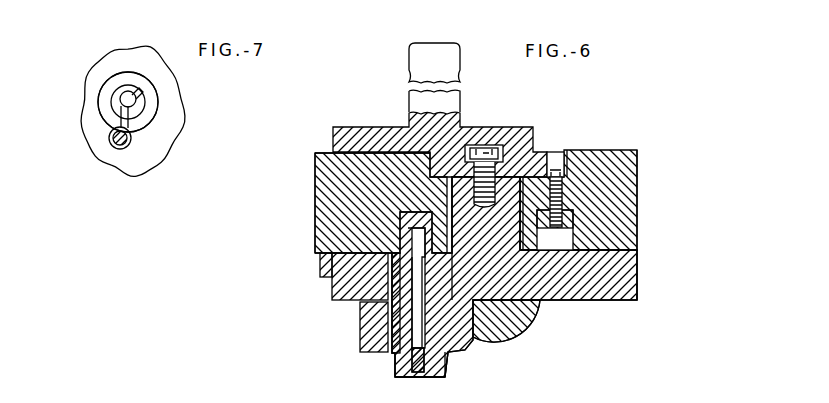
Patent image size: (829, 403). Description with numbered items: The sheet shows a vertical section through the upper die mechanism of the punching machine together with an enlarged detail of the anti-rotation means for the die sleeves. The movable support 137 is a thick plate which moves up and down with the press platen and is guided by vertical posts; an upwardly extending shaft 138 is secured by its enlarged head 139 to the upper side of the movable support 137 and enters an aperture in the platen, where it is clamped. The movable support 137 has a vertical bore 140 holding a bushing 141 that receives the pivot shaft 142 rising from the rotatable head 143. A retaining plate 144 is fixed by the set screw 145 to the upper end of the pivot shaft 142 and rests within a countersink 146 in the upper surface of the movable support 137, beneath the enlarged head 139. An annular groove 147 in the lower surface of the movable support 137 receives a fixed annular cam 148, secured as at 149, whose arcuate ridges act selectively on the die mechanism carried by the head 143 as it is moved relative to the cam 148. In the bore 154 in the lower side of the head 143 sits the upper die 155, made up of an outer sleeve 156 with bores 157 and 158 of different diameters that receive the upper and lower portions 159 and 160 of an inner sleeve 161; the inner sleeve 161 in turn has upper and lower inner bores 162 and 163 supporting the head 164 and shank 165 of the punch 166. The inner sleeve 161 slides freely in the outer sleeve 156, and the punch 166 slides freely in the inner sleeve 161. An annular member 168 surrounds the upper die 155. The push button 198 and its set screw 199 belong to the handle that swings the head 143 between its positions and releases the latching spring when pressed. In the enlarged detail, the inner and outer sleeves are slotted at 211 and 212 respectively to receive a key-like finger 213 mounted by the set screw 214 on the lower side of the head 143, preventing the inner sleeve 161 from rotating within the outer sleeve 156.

In FIG. 6, the movable support 137 is at (637, 190).
In FIG. 6, the shaft 138 is at (409, 69).
In FIG. 6, the enlarged head 139 is at (369, 133).
In FIG. 6, the vertical bore 140 is at (428, 172).
In FIG. 6, the bushing 141 is at (447, 197).
In FIG. 6, the pivot shaft 142 is at (478, 235).
In FIG. 6, the rotatable head 143 is at (627, 272).
In FIG. 6, the retaining plate 144 is at (316, 154).
In FIG. 6, the set screw 145 is at (488, 146).
In FIG. 6, the countersink 146 is at (554, 151).
In FIG. 6, the annular groove 147 is at (570, 238).
In FIG. 6, the annular cam 148 is at (618, 150).
In FIG. 6, the securing means 149 is at (573, 170).
In FIG. 6, the bore 154 is at (405, 318).
In FIG. 6, the upper die 155 is at (394, 380).
In FIG. 6, the outer sleeve 156 is at (438, 377).
In FIG. 6, the bore 157 is at (388, 278).
In FIG. 6, the bore 158 is at (420, 350).
In FIG. 6, the upper portion 159 is at (388, 303).
In FIG. 6, the lower portion 160 is at (446, 364).
In FIG. 6, the inner sleeve 161 is at (414, 331).
In FIG. 6, the upper inner bore 162 is at (487, 340).
In FIG. 6, the lower inner bore 163 is at (520, 328).
In FIG. 7, the head 164 is at (124, 97).
In FIG. 6, the head 164 is at (400, 235).
In FIG. 6, the shank 165 is at (408, 272).
In FIG. 6, the punch 166 is at (430, 318).
In FIG. 6, the annular member 168 is at (392, 350).
In FIG. 6, the push button 198 is at (566, 395).
In FIG. 6, the set screw 199 is at (521, 389).
In FIG. 7, the slot 211 is at (121, 106).
In FIG. 7, the slot 212 is at (119, 120).
In FIG. 7, the key-like finger 213 is at (131, 126).
In FIG. 7, the set screw 214 is at (110, 143).